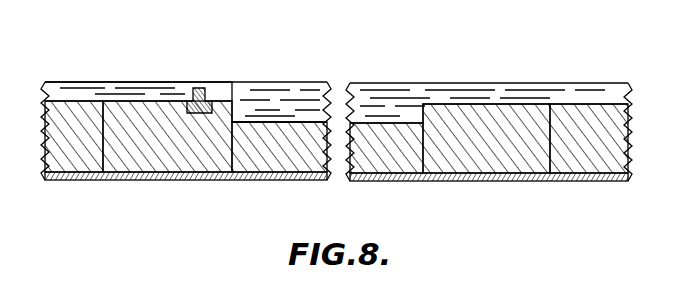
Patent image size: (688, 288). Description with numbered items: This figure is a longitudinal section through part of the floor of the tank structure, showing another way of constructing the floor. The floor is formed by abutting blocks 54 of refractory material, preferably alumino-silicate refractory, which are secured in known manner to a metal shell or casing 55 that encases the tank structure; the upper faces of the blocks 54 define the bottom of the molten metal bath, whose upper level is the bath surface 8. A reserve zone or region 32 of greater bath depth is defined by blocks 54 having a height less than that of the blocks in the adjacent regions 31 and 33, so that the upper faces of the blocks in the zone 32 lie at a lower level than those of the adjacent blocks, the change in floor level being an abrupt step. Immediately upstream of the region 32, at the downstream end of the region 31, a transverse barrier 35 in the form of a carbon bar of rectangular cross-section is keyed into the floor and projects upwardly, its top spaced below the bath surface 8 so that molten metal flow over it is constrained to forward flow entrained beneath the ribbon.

The bath surface 8 is at (166, 81).
The region 31 is at (62, 81).
The region of greater bath depth 32 is at (291, 83).
The region 33 is at (529, 84).
The transverse barrier 35 is at (203, 90).
The blocks of refractory material 54 is at (181, 150).
The metal shell or casing 55 is at (128, 181).